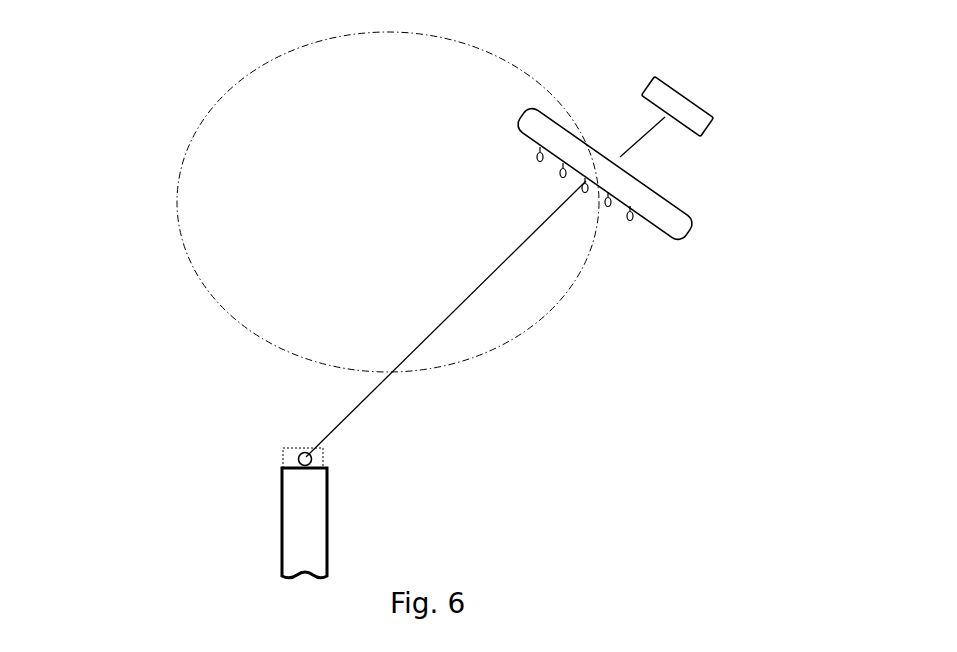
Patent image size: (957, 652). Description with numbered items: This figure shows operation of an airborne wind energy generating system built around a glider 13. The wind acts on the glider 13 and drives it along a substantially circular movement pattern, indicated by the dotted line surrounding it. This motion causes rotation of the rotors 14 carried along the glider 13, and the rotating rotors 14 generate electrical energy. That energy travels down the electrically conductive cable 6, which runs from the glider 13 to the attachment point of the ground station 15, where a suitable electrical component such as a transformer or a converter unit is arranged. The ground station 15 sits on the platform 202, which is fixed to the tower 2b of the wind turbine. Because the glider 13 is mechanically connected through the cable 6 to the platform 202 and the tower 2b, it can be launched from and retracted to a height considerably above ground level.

The tower 2b is at (298, 532).
The electrically conductive cable 6 is at (440, 326).
The glider 13 is at (697, 152).
The rotors 14 is at (561, 175).
The ground station 15 is at (287, 460).
The platform 202 is at (282, 467).